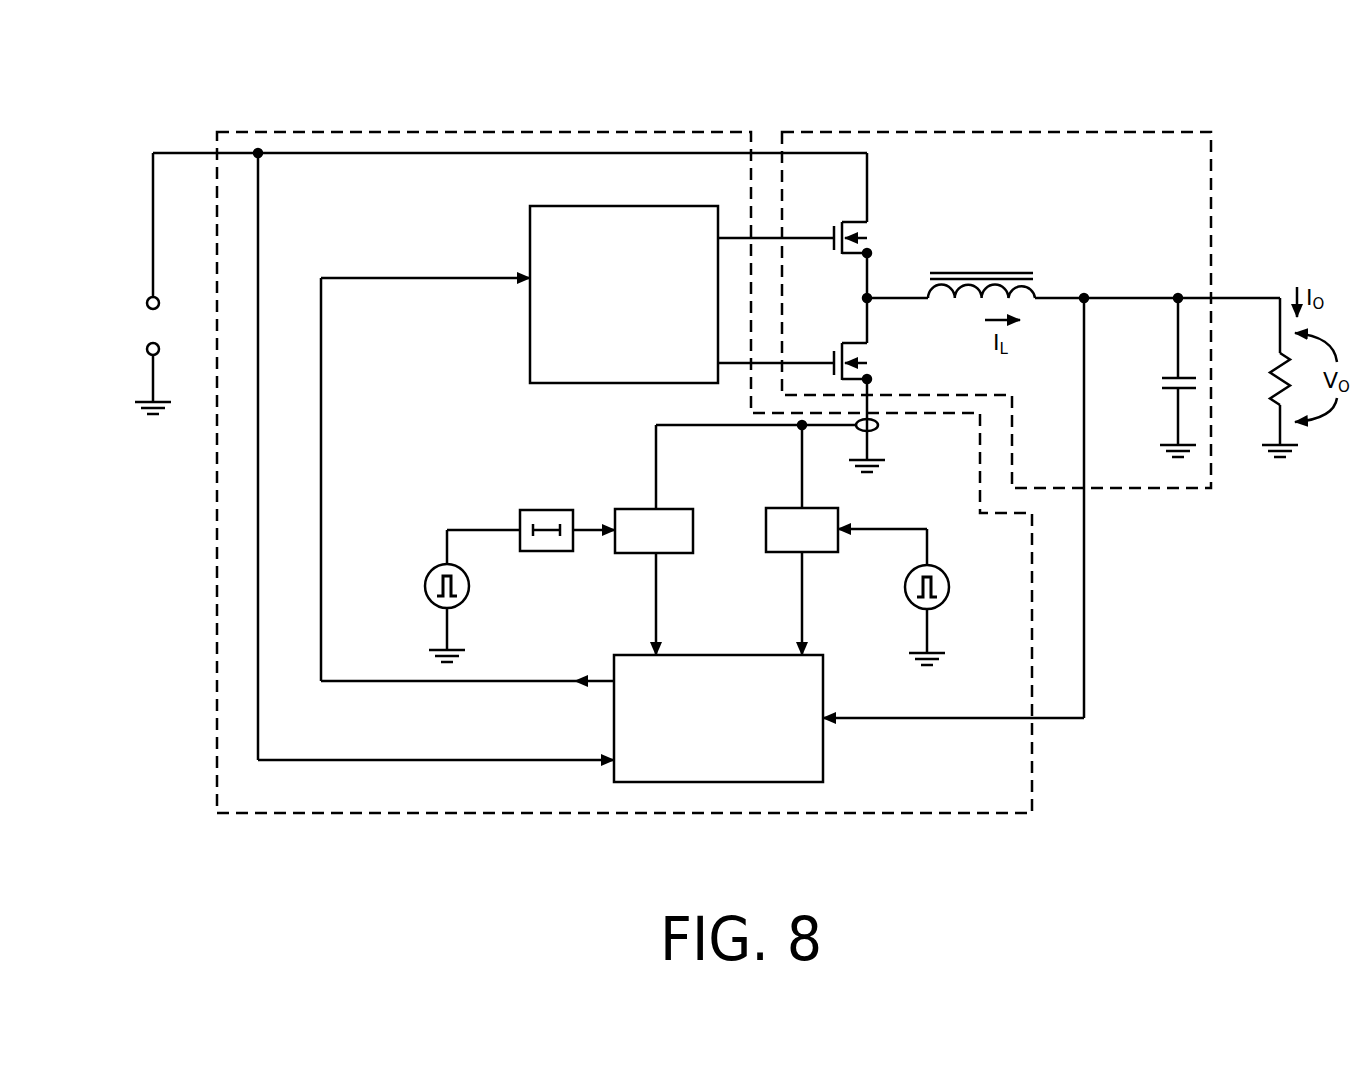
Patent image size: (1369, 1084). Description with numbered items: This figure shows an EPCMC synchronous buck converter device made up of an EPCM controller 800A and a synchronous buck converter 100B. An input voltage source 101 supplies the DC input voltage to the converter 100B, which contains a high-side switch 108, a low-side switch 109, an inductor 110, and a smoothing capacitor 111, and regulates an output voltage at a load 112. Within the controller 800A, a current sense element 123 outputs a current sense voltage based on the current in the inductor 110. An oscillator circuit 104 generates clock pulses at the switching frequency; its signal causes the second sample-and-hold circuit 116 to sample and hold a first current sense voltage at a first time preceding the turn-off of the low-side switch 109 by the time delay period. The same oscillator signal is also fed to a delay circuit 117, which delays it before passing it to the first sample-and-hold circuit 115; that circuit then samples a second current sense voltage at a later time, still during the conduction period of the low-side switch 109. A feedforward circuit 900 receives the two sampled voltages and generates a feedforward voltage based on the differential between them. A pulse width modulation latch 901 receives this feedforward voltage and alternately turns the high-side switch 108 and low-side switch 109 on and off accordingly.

The EPCM controller 800A is at (333, 132).
The synchronous buck converter 100B is at (853, 132).
The input voltage source 101 is at (147, 303).
The oscillator circuit 104 is at (433, 601).
The high-side switch 108 is at (872, 238).
The low-side switch 109 is at (872, 363).
The inductor 110 is at (997, 275).
The smoothing capacitor 111 is at (1162, 382).
The load 112 is at (1272, 377).
The first sample-and-hold circuit 115 is at (682, 509).
The second sample-and-hold circuit 116 is at (783, 553).
The delay circuit 117 is at (520, 525).
The current sense element 123 is at (880, 426).
The feedforward circuit 900 is at (823, 763).
The pulse width modulation latch 901 is at (530, 344).